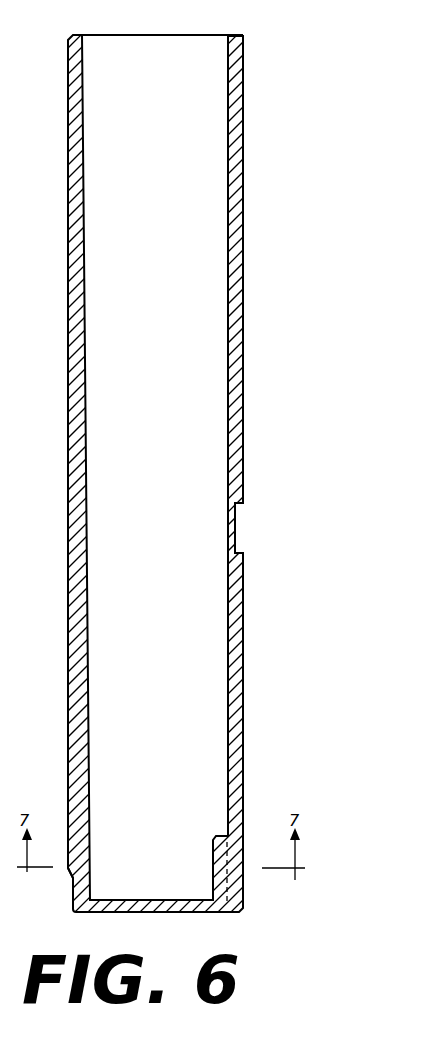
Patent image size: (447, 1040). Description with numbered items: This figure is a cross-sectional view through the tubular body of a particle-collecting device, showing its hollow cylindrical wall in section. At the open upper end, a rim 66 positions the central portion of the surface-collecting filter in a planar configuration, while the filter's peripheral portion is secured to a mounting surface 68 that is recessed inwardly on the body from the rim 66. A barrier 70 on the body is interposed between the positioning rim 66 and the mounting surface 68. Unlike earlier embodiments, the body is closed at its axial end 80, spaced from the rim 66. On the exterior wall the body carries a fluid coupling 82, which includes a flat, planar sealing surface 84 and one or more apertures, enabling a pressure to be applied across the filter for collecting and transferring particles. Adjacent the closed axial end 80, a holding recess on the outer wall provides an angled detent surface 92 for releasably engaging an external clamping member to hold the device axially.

The rim 66 is at (231, 35).
The mounting surface 68 is at (243, 38).
The barrier 70 is at (243, 30).
The closed axial end 80 is at (206, 912).
The fluid coupling 82 is at (250, 516).
The sealing surface 84 is at (237, 552).
The angled detent surface 92 is at (72, 878).